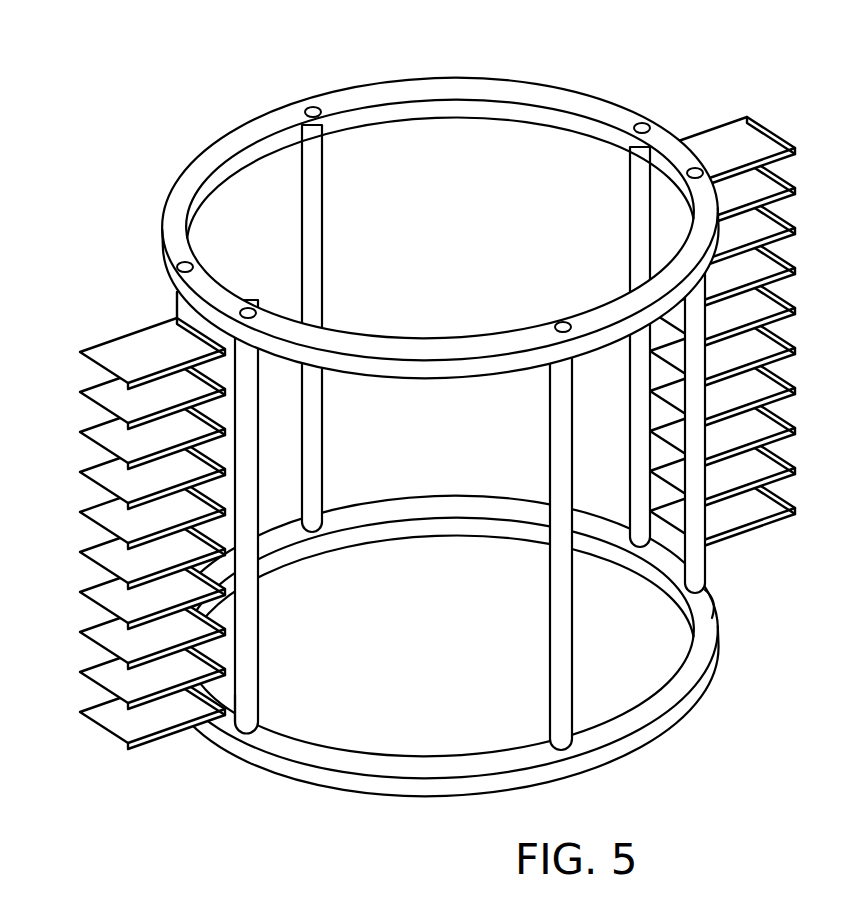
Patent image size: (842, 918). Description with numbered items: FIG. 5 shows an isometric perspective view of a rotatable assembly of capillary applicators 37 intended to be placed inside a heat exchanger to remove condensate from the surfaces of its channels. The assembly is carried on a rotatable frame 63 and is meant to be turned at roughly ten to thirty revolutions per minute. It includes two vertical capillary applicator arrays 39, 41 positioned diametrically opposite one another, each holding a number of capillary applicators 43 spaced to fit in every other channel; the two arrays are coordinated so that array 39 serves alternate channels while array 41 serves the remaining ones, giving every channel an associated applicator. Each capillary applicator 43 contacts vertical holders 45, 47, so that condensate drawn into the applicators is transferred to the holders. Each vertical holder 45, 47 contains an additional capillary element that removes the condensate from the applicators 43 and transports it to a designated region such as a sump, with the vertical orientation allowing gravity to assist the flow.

The rotatable assembly of capillary applicators 37 is at (530, 82).
The vertical capillary applicator array 39 is at (708, 563).
The vertical capillary applicator array 41 is at (267, 723).
The capillary applicator 43 is at (157, 345).
The vertical holder 45 is at (713, 612).
The vertical holder 47 is at (242, 698).
The rotatable frame 63 is at (392, 80).